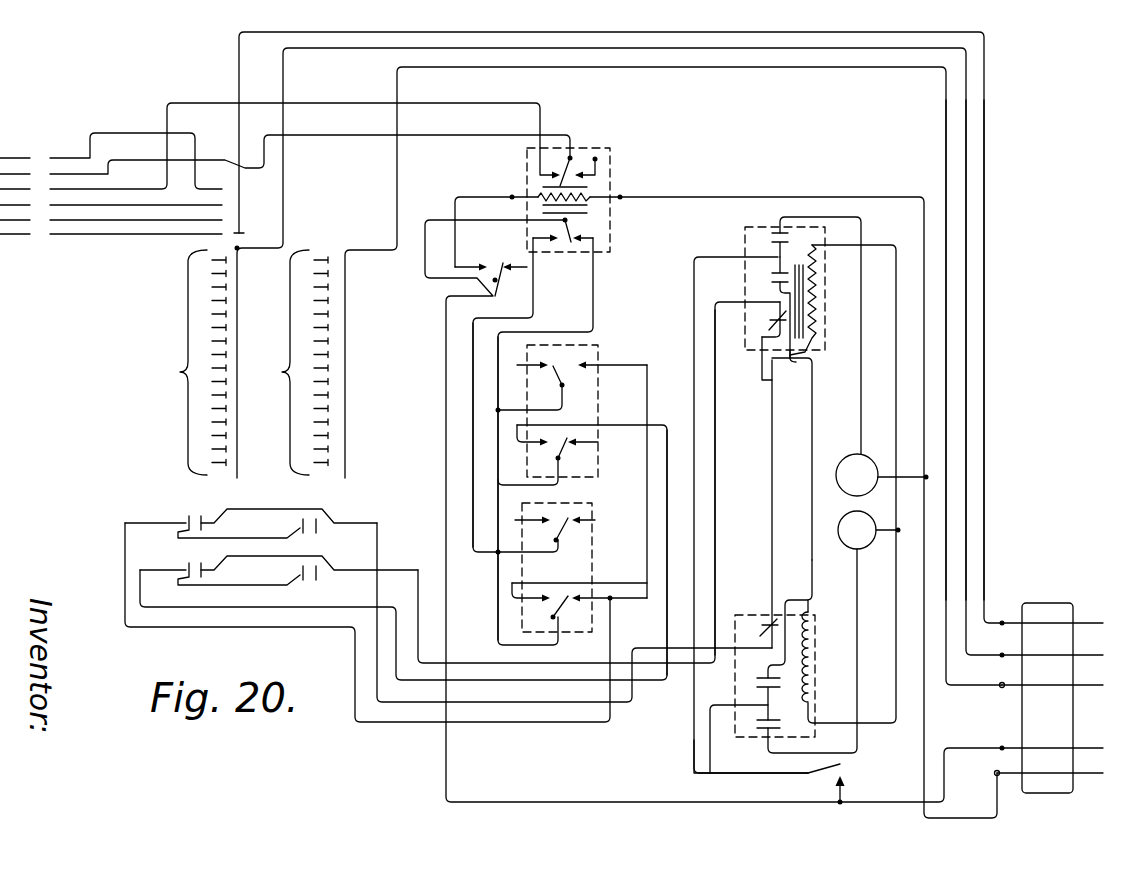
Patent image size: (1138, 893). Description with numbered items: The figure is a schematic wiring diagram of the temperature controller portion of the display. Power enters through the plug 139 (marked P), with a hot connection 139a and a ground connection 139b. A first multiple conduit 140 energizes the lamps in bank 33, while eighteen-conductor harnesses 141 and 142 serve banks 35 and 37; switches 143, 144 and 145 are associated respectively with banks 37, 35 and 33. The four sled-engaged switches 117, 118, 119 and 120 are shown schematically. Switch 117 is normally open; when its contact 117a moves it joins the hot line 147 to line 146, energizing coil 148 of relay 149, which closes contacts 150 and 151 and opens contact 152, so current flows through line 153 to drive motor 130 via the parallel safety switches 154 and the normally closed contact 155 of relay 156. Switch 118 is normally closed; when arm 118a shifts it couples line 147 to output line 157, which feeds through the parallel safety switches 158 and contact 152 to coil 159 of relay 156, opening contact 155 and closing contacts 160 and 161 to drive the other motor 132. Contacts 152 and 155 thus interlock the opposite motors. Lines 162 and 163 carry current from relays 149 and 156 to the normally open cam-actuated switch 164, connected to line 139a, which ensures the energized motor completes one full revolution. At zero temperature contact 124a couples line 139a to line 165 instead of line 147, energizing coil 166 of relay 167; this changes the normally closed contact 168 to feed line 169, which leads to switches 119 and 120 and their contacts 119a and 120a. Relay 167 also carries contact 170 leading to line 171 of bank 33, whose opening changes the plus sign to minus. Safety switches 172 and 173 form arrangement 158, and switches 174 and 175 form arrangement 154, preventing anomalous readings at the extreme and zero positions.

The lamp bank 33 is at (12, 146).
The lamp bank 35 is at (164, 362).
The lamp bank 37 is at (279, 362).
The sled-engaged switch 117 is at (590, 347).
The switch contact 117a is at (559, 370).
The sled-engaged switch 118 is at (582, 440).
The switch arm 118a is at (568, 449).
The sled-engaged switch 119 is at (582, 523).
The switch contact 119a is at (572, 513).
The sled-engaged switch 120 is at (578, 597).
The switch contact 120a is at (560, 598).
The switch contact 124a is at (493, 264).
The drive motor 130 is at (848, 455).
The drive motor 132 is at (845, 547).
The plug 139 is at (1064, 605).
The hot line connection 139a is at (1073, 742).
The ground connection 139b is at (1073, 778).
The first multiple conduit 140 is at (988, 323).
The cable or harness 141 is at (968, 300).
The cable or harness 142 is at (948, 268).
The switch 143 is at (330, 403).
The switch 144 is at (208, 429).
The switch 145 is at (218, 224).
The line 146 is at (626, 365).
The hot line 147 is at (495, 378).
The relay coil 148 is at (815, 319).
The relay 149 is at (758, 226).
The relay contact 150 is at (768, 278).
The relay contact 151 is at (770, 237).
The relay contact 152 is at (765, 323).
The line 153 is at (796, 362).
The parallel safety switches 154 is at (333, 502).
The relay contact 155 is at (765, 612).
The relay 156 is at (812, 620).
The switch output line 157 is at (667, 424).
The parallel safety switches 158 is at (346, 558).
The relay coil 159 is at (818, 658).
The relay contact 160 is at (757, 682).
The relay contact 161 is at (757, 725).
The line 162 is at (700, 470).
The line 163 is at (710, 743).
The cam actuated switch 164 is at (845, 774).
The line 165 is at (521, 181).
The relay coil 166 is at (612, 171).
The relay 167 is at (613, 148).
The relay contact 168 is at (574, 231).
The line 169 is at (470, 414).
The relay contact 170 is at (572, 155).
The line 171 is at (130, 183).
The safety switch 172 is at (197, 565).
The safety switch 173 is at (312, 578).
The safety switch 174 is at (191, 516).
The safety switch 175 is at (311, 532).
The plug P is at (1052, 632).